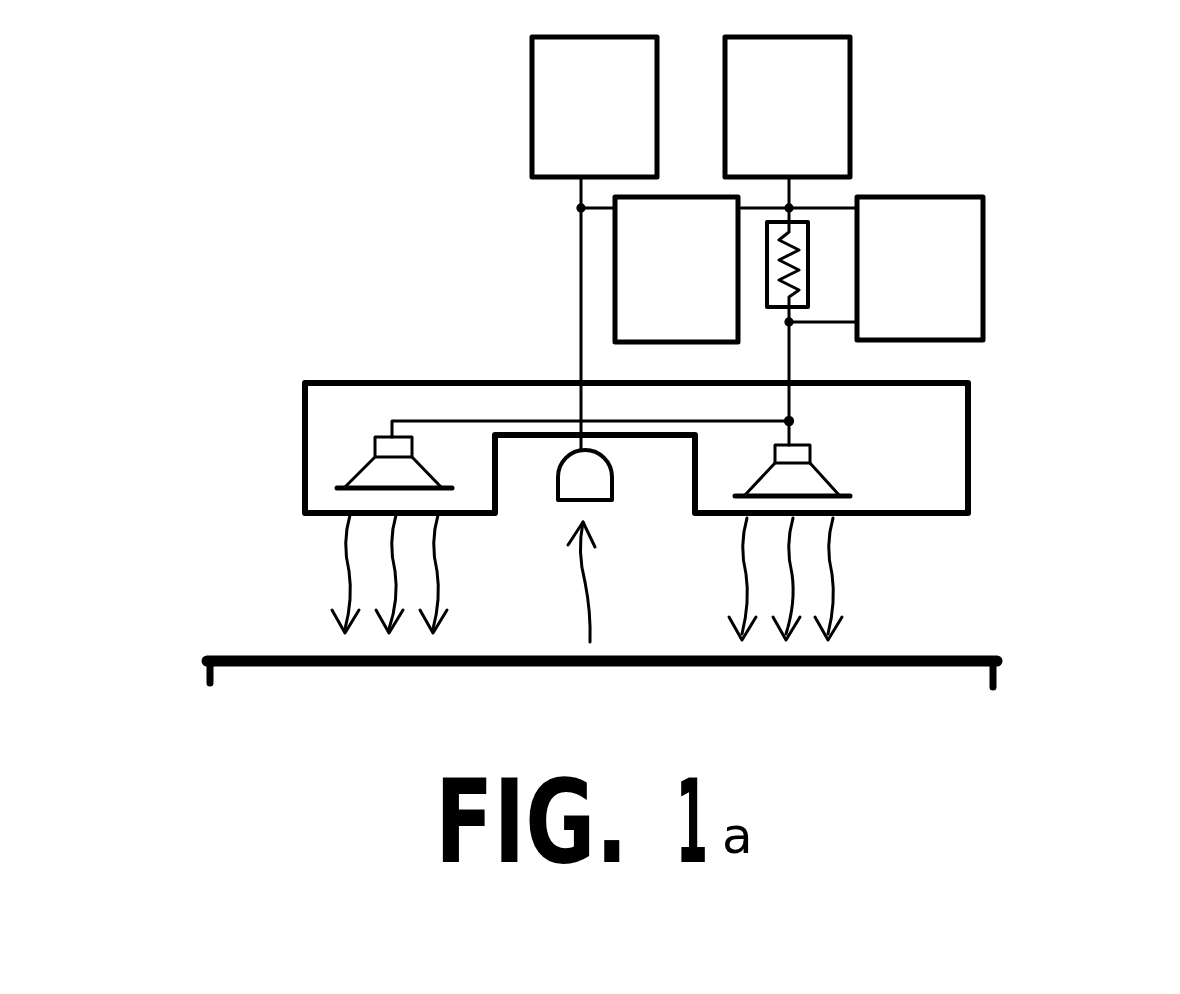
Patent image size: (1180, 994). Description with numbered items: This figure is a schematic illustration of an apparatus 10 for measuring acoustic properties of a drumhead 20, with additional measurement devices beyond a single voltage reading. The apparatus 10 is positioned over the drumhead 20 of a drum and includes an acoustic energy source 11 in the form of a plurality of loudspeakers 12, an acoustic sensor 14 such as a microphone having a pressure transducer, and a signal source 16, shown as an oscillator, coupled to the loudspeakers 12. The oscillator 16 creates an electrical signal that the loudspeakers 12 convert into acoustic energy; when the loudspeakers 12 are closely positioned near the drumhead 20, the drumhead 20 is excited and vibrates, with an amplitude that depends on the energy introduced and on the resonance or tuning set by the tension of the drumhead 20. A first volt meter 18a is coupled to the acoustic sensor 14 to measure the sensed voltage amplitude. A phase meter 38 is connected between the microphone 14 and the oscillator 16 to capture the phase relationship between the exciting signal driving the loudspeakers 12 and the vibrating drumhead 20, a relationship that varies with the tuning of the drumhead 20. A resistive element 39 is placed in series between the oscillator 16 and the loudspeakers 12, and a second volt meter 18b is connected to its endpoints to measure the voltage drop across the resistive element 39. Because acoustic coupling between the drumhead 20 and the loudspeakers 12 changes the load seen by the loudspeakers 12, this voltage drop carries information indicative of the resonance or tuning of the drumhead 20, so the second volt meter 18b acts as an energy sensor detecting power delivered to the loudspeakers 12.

The apparatus 10 is at (360, 180).
The acoustic energy source 11 is at (966, 383).
The loudspeakers 12 is at (356, 474).
The acoustic sensor 14 is at (600, 507).
The signal source 16 is at (860, 112).
The first volt meter 18a is at (525, 87).
The second volt meter 18b is at (990, 252).
The drumhead 20 is at (975, 645).
The phase meter 38 is at (615, 259).
The resistive element 39 is at (812, 240).